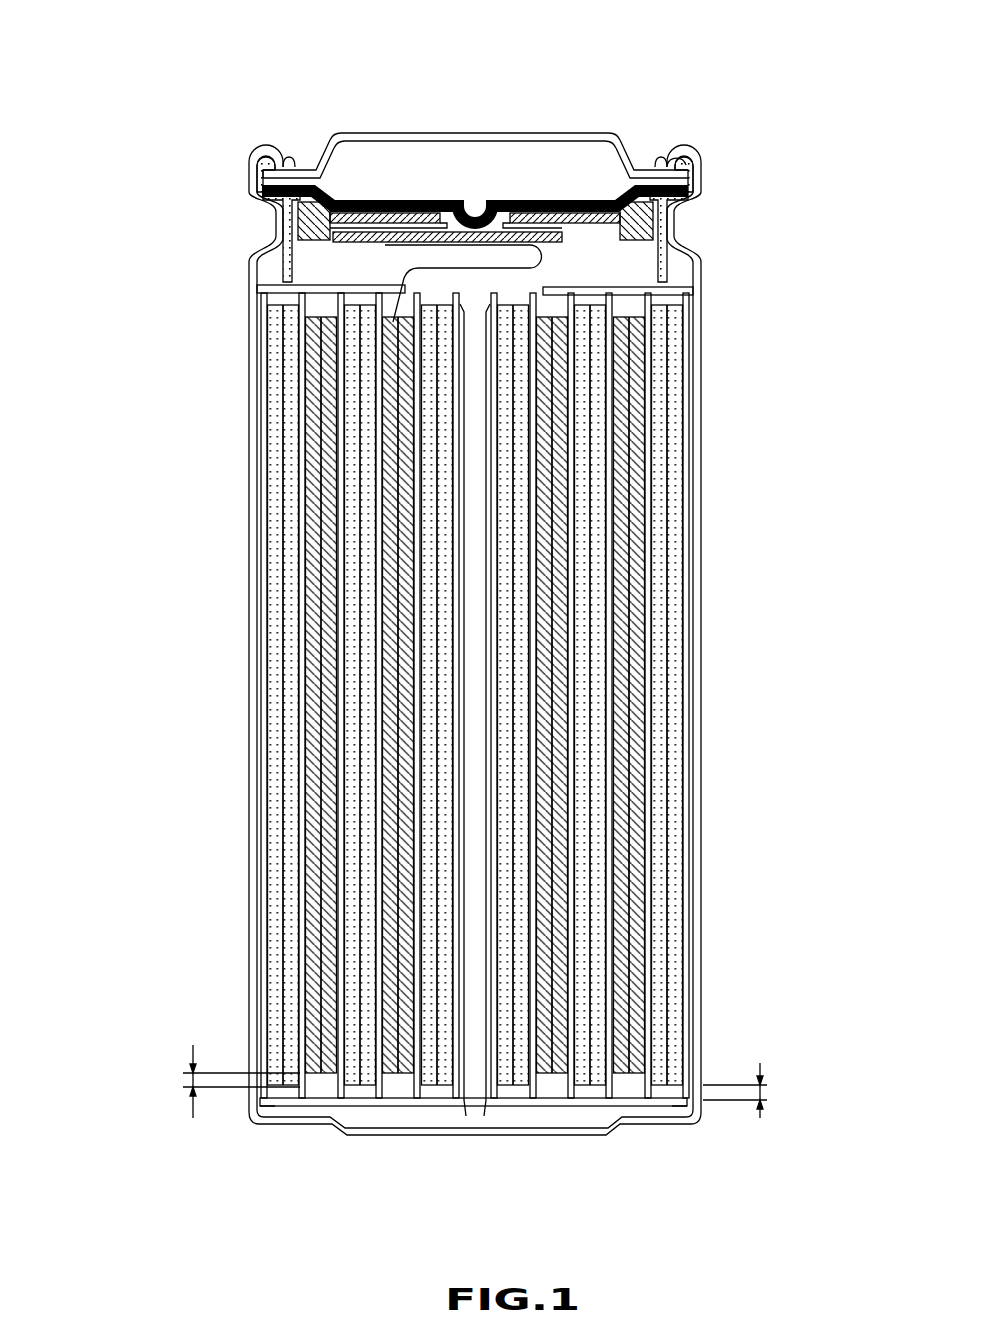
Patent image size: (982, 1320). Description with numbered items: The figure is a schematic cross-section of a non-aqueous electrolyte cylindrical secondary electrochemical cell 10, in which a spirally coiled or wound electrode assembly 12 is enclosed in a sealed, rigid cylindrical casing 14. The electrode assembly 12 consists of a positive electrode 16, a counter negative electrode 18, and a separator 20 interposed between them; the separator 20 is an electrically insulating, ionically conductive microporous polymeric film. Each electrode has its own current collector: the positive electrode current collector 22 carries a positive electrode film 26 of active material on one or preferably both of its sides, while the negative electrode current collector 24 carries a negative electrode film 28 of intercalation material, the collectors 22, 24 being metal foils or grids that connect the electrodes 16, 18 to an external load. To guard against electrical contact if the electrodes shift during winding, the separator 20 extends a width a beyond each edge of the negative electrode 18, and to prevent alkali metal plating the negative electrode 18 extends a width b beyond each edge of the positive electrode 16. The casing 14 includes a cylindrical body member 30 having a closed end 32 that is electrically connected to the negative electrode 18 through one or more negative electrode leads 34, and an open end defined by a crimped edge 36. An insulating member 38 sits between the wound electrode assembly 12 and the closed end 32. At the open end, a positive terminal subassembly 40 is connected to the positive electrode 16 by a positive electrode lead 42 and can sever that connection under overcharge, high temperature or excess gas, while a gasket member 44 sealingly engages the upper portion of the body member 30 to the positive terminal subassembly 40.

The secondary electrochemical cell 10 is at (195, 122).
The electrode assembly 12 is at (687, 362).
The cylindrical casing 14 is at (704, 432).
The positive electrode 16 is at (787, 583).
The negative electrode 18 is at (787, 490).
The separator 20 is at (650, 712).
The positive electrode current collector 22 is at (630, 627).
The negative electrode current collector 24 is at (668, 535).
The positive electrode film 26 is at (640, 590).
The negative electrode film 28 is at (677, 497).
The cylindrical body member 30 is at (248, 900).
The closed end 32 is at (307, 1128).
The negative electrode lead 34 is at (280, 1100).
The crimped edge 36 is at (672, 158).
The insulating member 38 is at (680, 1103).
The positive terminal subassembly 40 is at (412, 198).
The positive electrode lead 42 is at (546, 256).
The gasket member 44 is at (683, 160).